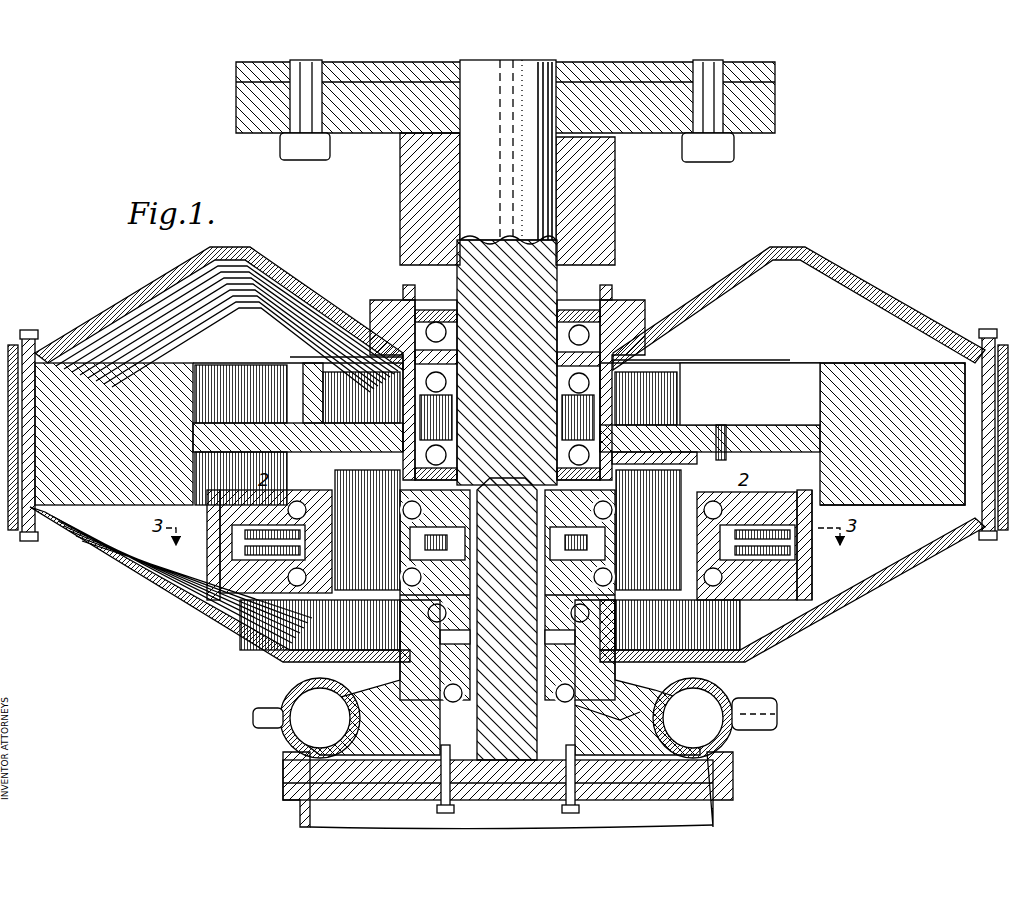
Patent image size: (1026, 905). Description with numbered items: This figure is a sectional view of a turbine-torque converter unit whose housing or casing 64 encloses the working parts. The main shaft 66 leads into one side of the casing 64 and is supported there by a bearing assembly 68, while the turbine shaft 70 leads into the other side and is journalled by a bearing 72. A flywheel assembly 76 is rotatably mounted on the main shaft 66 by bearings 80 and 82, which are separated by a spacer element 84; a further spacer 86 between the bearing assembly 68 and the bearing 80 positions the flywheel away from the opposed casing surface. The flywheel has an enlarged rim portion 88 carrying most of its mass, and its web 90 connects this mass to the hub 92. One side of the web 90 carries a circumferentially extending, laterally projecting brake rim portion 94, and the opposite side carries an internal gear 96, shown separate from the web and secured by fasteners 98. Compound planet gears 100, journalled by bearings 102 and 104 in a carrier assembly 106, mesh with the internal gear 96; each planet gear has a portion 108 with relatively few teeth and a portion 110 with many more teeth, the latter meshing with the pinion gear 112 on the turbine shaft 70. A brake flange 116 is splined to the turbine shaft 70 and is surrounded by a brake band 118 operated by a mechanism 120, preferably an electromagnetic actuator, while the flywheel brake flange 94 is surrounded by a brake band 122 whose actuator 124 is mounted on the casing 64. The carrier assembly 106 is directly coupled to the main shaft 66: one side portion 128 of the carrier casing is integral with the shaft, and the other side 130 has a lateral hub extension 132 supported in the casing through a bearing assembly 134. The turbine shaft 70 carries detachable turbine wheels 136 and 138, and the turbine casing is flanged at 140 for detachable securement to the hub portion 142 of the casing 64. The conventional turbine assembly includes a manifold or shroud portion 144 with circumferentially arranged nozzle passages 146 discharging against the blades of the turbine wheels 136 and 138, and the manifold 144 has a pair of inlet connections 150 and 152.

The housing or casing 64 is at (940, 562).
The main shaft 66 is at (488, 196).
The bearing assembly 68 is at (458, 340).
The turbine shaft 70 is at (523, 626).
The bearing 72 is at (468, 700).
The flywheel assembly 76 is at (192, 357).
The bearing 80 is at (458, 393).
The bearing 82 is at (458, 446).
The spacer element 84 is at (458, 416).
The spacer 86 is at (458, 357).
The rim portion 88 is at (903, 363).
The web 90 is at (805, 393).
The hub 92 is at (618, 360).
The brake rim portion 94 is at (677, 373).
The internal gear 96 is at (734, 470).
The fasteners 98 is at (723, 428).
The planet gears 100 is at (327, 595).
The bearing 102 is at (748, 484).
The bearing 104 is at (723, 593).
The carrier assembly 106 is at (815, 559).
The planet gear portion 108 is at (392, 485).
The planet gear portion 110 is at (236, 551).
The pinion gear 112 is at (473, 568).
The brake flange 116 is at (452, 663).
The brake band 118 is at (418, 684).
The mechanism 120 is at (602, 632).
The brake band 122 is at (322, 373).
The actuator 124 is at (703, 387).
The carrier casing side portion 128 is at (276, 541).
The carrier side 130 is at (269, 546).
The lateral hub extension 132 is at (462, 600).
The bearing assembly 134 is at (420, 612).
The turbine wheel 136 is at (608, 756).
The turbine wheel 138 is at (622, 804).
The flange 140 is at (605, 712).
The hub portion 142 is at (612, 680).
The manifold or shroud portion 144 is at (728, 693).
The nozzle passages 146 is at (697, 755).
The inlet connection 150 is at (772, 732).
The inlet connection 152 is at (262, 730).